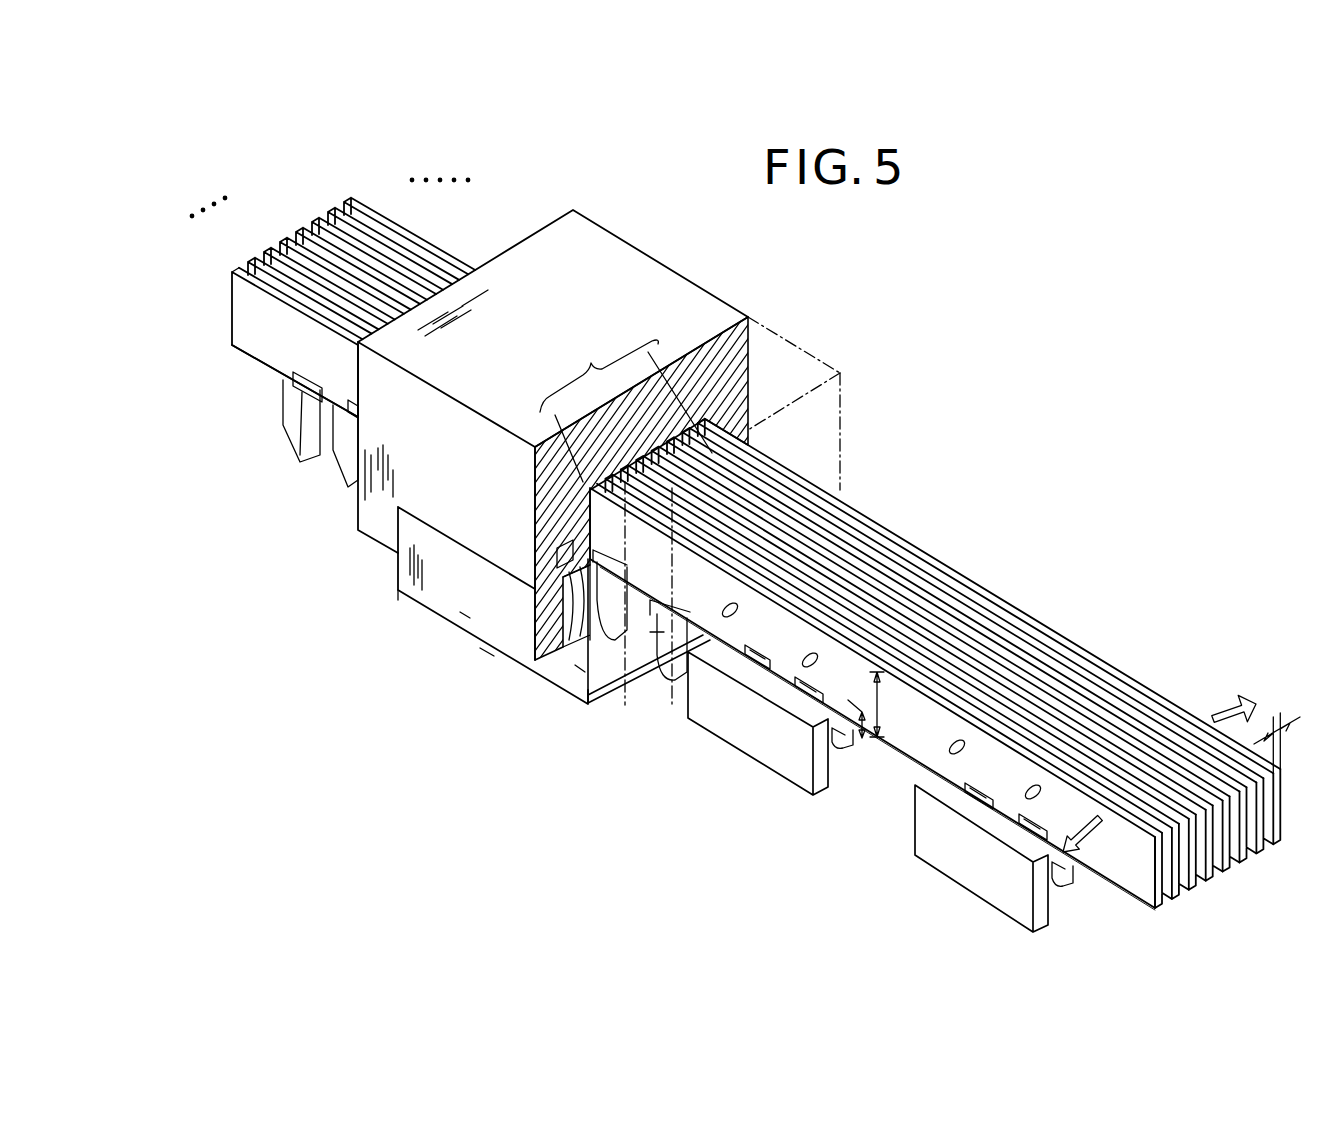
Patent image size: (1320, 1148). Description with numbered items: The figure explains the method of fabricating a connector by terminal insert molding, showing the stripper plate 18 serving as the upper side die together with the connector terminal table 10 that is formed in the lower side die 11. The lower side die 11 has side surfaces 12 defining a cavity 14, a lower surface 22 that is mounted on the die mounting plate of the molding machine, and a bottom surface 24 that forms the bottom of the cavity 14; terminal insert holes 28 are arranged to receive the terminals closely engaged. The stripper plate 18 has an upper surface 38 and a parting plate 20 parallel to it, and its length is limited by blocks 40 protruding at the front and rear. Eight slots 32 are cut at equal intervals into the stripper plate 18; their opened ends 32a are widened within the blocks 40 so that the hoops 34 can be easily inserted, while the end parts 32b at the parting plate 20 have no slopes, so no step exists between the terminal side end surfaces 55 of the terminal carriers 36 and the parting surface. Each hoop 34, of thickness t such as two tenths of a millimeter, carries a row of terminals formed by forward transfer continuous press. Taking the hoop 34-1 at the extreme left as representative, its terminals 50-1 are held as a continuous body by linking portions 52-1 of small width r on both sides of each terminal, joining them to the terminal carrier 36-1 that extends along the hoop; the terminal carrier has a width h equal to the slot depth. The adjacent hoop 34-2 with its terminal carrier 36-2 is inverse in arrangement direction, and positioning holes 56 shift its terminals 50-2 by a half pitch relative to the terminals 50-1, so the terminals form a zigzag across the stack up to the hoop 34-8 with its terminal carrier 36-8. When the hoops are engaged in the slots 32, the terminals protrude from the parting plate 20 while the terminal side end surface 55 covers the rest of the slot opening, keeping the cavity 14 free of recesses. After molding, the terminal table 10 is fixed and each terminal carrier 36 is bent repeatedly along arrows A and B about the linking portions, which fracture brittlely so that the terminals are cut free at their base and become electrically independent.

The connector terminal table 10 is at (776, 768).
The lower side die 11 is at (390, 608).
The side surfaces of the cavity 12 is at (462, 607).
The cavity 14 is at (578, 668).
The stripper plate 18 is at (757, 300).
The parting plate (parting plane) 20 is at (470, 555).
The lower surface 22 is at (487, 648).
The bottom surface 24 is at (657, 648).
The terminal insert holes 28 is at (580, 562).
The slots 32 is at (626, 409).
The opened ends of the slots 32a is at (655, 660).
The end parts of the slots 32b is at (533, 637).
The hoops 34 is at (1160, 913).
The hoop at the extreme left end 34-1 is at (232, 312).
The adjacent hoop 34-2 is at (247, 265).
The eighth hoop 34-8 is at (352, 245).
The terminal carriers 36 is at (840, 663).
The terminal carrier of the first hoop 36-1 is at (260, 347).
The terminal carrier of the second hoop 36-2 is at (287, 290).
The terminal carrier of the eighth hoop 36-8 is at (425, 262).
The upper surface of the stripper plate 38 is at (558, 268).
The blocks 40 is at (394, 560).
The terminals of the first hoop 50-1 is at (310, 460).
The terminals of the second hoop 50-2 is at (292, 435).
The linking portions 52-1 is at (308, 380).
The terminal side end surface 55 is at (272, 363).
The positioning holes 56 is at (1033, 793).
The bending direction arrow A is at (1082, 824).
The bending direction arrow B is at (1228, 703).
The width of the terminal carriers h is at (885, 704).
The width of the linking portions r is at (849, 708).
The thickness of the hoop t is at (1276, 723).